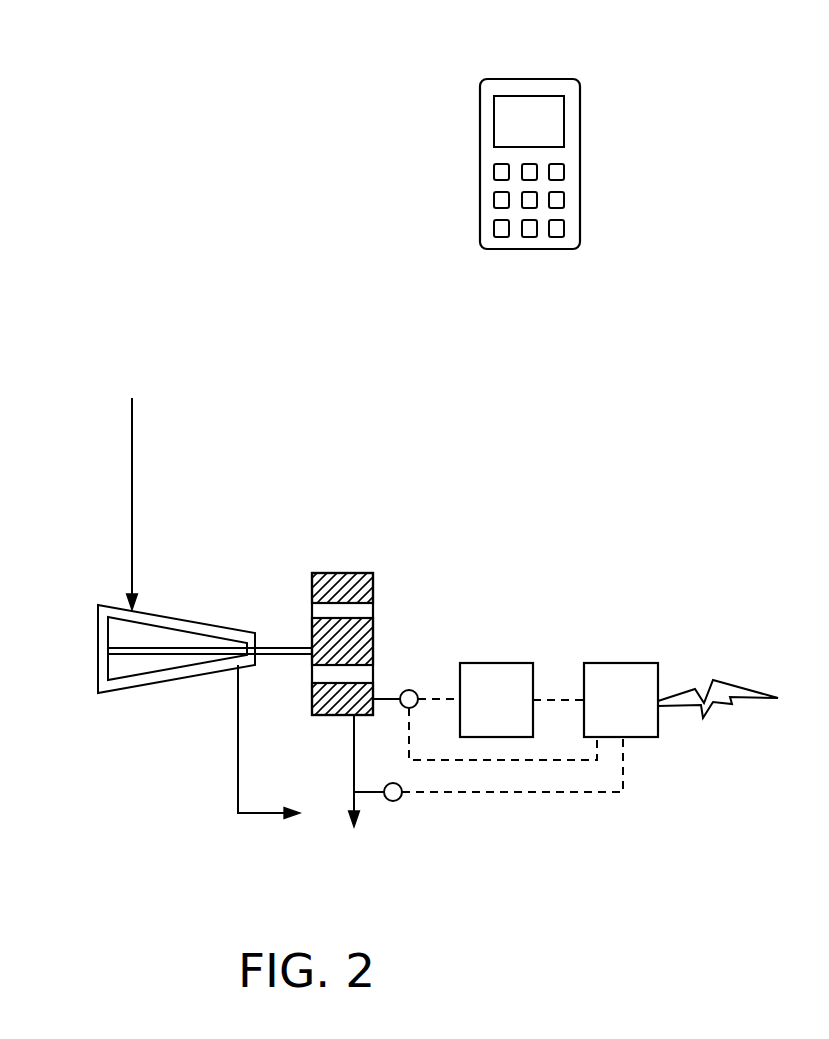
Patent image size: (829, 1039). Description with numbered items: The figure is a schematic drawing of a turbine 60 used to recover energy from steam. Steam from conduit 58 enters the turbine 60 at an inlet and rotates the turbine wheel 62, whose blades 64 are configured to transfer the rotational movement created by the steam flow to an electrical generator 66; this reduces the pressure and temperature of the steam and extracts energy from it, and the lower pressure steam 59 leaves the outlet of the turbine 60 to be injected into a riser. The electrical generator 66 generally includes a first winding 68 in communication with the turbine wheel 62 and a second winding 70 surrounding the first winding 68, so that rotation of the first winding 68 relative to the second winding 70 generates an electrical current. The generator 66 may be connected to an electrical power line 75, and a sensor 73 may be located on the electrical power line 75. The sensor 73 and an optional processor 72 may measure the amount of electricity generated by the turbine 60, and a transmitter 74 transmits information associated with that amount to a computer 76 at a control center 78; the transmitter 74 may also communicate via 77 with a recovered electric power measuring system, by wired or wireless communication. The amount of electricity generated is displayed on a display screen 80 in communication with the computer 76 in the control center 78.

The conduit 58 is at (132, 450).
The lower pressure steam 59 is at (254, 815).
The turbine 60 is at (410, 623).
The turbine wheel 62 is at (110, 650).
The blades 64 is at (155, 638).
The electrical generator 66 is at (485, 685).
The first winding 68 is at (312, 624).
The second winding 70 is at (343, 573).
The processor 72 is at (496, 700).
The sensor 73 is at (408, 690).
The transmitter 74 is at (621, 700).
The electrical power line 75 is at (354, 760).
The computer 76 is at (480, 162).
The communication 77 is at (715, 703).
The control center 78 is at (522, 133).
The display screen 80 is at (548, 126).